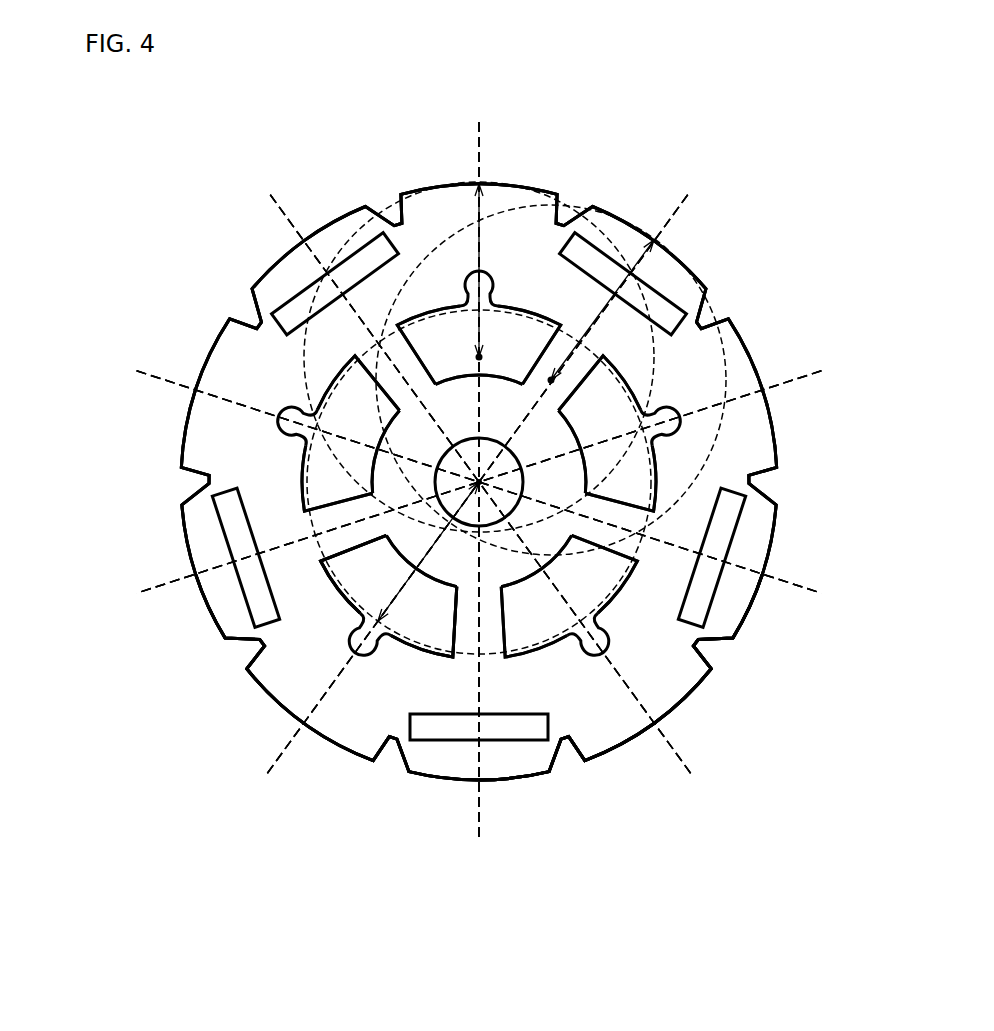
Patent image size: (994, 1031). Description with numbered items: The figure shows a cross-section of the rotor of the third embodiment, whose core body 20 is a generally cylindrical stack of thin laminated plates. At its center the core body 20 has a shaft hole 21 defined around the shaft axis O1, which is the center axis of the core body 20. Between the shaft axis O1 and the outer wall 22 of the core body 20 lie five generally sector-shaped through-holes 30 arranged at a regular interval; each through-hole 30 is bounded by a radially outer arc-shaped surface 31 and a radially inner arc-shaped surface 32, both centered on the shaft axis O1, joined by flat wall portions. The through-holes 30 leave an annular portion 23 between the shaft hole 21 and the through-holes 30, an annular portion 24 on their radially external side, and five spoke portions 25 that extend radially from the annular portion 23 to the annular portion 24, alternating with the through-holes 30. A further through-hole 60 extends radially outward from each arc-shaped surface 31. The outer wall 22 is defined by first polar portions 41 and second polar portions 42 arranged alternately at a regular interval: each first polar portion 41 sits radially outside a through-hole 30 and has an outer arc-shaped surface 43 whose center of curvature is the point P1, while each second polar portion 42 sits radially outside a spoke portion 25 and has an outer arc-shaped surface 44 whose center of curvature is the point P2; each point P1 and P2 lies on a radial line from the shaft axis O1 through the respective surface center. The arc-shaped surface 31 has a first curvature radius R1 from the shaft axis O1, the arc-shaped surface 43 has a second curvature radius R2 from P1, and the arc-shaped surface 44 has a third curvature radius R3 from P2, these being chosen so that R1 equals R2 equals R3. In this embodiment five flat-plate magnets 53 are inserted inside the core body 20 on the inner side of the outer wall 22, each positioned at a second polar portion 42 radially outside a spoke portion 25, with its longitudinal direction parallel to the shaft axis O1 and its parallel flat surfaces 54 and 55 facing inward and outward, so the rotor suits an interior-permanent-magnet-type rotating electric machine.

The core body 20 is at (594, 760).
The shaft hole 21 is at (481, 438).
The outer wall 22 is at (692, 694).
The annular portion 23 is at (404, 552).
The annular portion 24 is at (262, 652).
The spoke portion 25 is at (395, 345).
The through-hole 30 is at (548, 325).
The arc-shaped surface 31 is at (449, 384).
The arc-shaped surface 32 is at (420, 352).
The first polar portion 41 is at (477, 162).
The second polar portion 42 is at (292, 222).
The arc-shaped surface 43 is at (487, 184).
The arc-shaped surface 44 is at (352, 214).
The magnet 53 is at (292, 308).
The flat surface 54 is at (372, 236).
The flat surface 55 is at (408, 272).
The through-hole 60 is at (462, 284).
The shaft axis O1 is at (486, 482).
The point P1 is at (484, 357).
The point P2 is at (551, 386).
The first curvature radius R1 is at (479, 482).
The second curvature radius R2 is at (491, 270).
The third curvature radius R3 is at (602, 310).